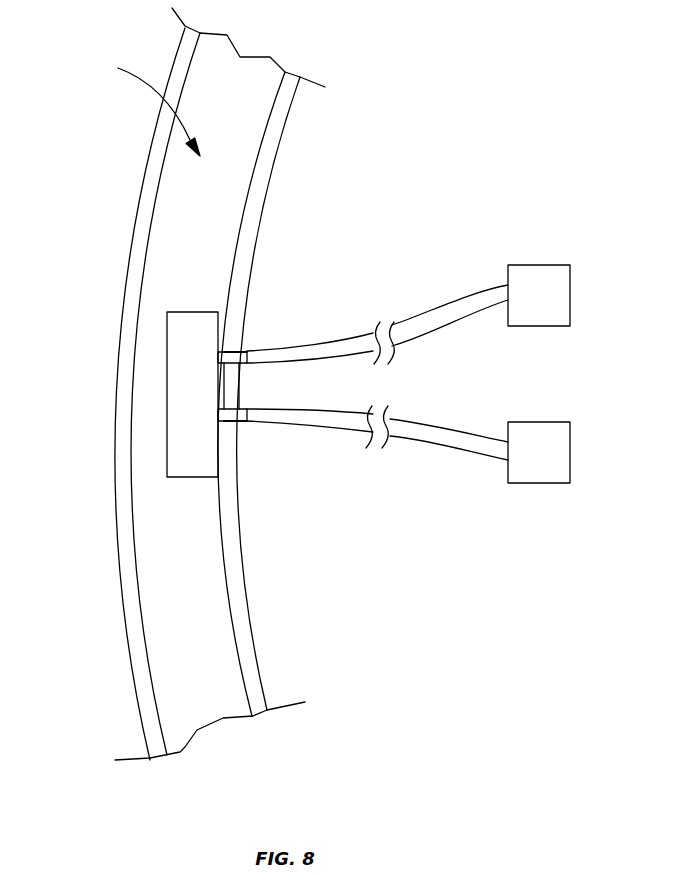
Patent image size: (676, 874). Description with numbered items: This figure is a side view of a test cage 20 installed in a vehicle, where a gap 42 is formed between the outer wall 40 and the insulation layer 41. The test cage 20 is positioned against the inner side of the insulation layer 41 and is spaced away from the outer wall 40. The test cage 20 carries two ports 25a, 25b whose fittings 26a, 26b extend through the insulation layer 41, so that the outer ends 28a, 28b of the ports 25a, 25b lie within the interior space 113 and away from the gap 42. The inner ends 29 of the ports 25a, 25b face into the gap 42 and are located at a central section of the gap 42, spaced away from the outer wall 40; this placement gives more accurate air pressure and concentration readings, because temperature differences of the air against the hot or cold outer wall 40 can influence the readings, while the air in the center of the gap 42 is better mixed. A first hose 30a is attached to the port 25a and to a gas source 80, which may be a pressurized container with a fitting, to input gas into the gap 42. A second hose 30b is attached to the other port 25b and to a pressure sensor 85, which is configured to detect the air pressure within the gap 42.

The test cage 20 is at (182, 442).
The port 25a is at (238, 326).
The port 25b is at (233, 448).
The fitting 26a is at (241, 351).
The fitting 26b is at (238, 423).
The outer end 28a is at (248, 352).
The outer end 28b is at (248, 420).
The inner ends 29 is at (219, 353).
The first hose 30a is at (420, 322).
The second hose 30b is at (417, 438).
The outer wall 40 is at (146, 190).
The insulation layer 41 is at (255, 180).
The gap 42 is at (144, 105).
The gas source 80 is at (528, 305).
The pressure sensor 85 is at (528, 462).
The interior space 113 is at (461, 165).